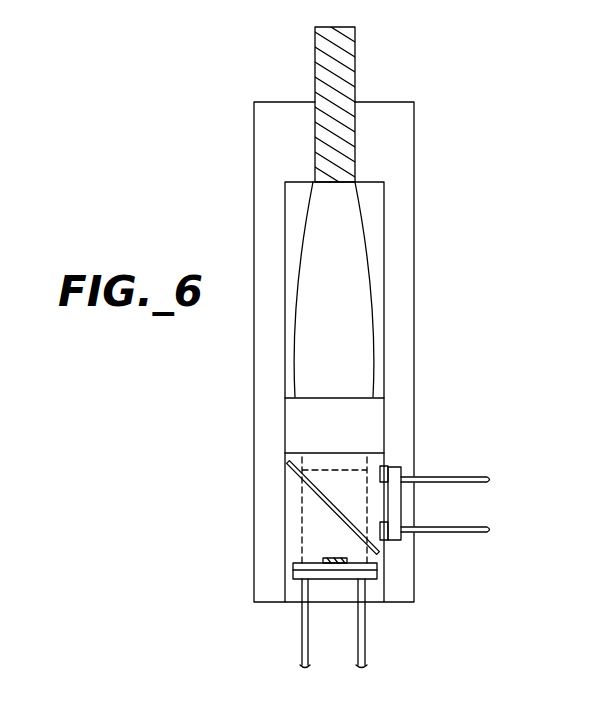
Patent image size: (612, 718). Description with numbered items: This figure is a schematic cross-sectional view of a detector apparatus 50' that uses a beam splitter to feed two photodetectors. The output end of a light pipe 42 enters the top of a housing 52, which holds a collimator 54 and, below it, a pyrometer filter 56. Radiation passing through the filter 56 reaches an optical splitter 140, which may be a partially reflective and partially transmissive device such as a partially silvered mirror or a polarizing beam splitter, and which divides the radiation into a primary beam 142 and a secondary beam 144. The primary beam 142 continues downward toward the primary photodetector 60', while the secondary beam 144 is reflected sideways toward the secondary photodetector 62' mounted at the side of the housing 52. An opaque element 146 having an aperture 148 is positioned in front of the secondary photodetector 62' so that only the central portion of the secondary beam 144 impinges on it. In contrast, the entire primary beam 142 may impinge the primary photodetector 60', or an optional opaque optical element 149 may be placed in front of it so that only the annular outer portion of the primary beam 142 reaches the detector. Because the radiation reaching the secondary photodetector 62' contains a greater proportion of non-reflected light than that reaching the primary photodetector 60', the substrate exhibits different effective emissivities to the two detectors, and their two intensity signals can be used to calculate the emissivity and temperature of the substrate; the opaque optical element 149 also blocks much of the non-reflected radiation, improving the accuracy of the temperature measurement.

The light pipe 42 is at (355, 50).
The housing 52 is at (414, 145).
The collimator 54 is at (295, 215).
The pyrometer filter 56 is at (302, 430).
The detector apparatus 50' is at (501, 221).
The optical splitter 140 is at (312, 493).
The primary beam 142 is at (302, 543).
The secondary beam 144 is at (347, 468).
The opaque element 146 is at (381, 500).
The aperture 148 is at (402, 505).
The secondary photodetector 62' is at (442, 529).
The opaque optical element 149 is at (330, 565).
The primary photodetector 60' is at (260, 622).